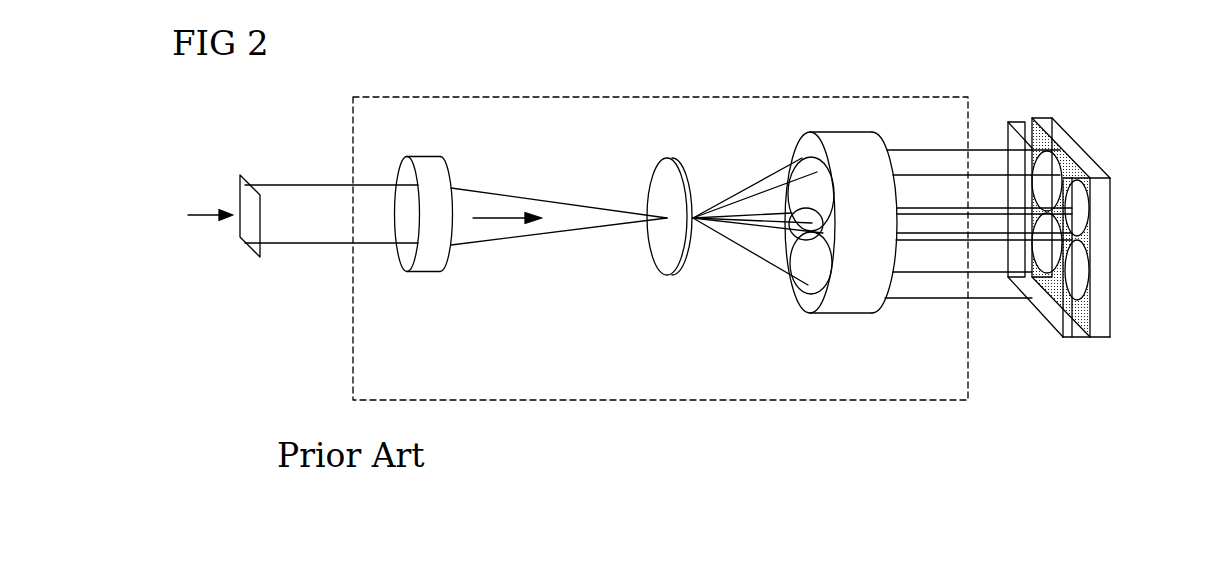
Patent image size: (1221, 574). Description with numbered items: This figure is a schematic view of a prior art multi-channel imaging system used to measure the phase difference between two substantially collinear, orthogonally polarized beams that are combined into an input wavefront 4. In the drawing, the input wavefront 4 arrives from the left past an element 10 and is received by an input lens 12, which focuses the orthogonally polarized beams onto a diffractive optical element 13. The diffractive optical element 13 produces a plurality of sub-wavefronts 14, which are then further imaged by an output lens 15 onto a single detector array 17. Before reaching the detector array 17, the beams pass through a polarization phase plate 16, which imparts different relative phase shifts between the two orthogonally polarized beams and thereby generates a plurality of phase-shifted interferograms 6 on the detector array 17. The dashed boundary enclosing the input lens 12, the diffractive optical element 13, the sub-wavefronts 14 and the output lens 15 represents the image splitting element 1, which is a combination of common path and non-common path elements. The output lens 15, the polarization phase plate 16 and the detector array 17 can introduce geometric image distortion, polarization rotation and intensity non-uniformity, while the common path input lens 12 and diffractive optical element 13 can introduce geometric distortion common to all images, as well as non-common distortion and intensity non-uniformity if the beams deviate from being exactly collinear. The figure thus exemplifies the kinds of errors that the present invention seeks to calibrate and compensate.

The image splitting element 1 is at (355, 368).
The input wavefront 4 is at (273, 184).
The phase-shifted interferograms 6 is at (1056, 152).
The light source 10 is at (255, 253).
The input lens 12 is at (431, 278).
The diffractive optical element 13 is at (675, 275).
The sub-wavefronts 14 is at (738, 187).
The output lens 15 is at (851, 316).
The polarization phase plate 16 is at (1063, 334).
The detector array 17 is at (1104, 338).